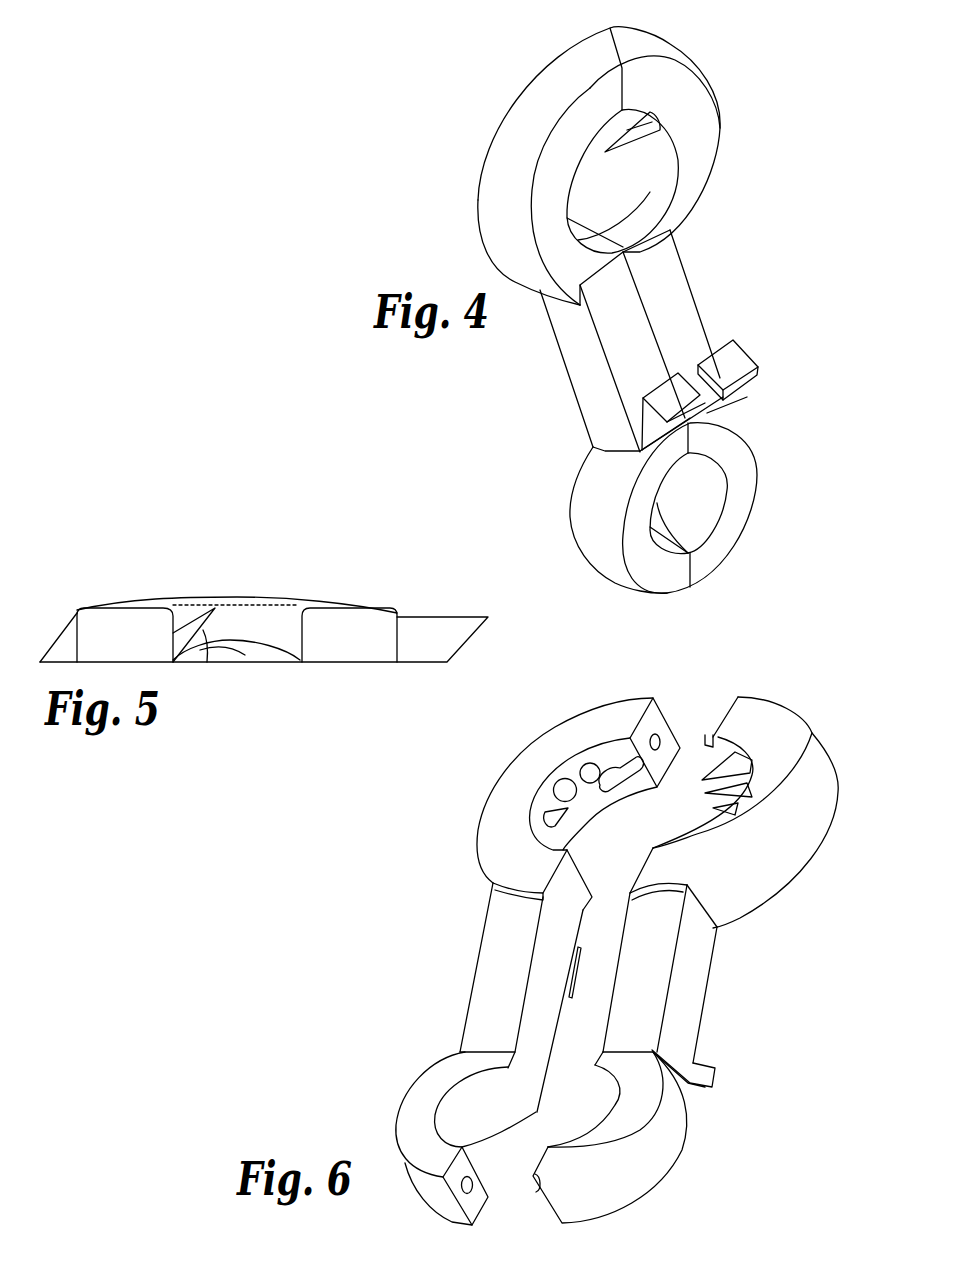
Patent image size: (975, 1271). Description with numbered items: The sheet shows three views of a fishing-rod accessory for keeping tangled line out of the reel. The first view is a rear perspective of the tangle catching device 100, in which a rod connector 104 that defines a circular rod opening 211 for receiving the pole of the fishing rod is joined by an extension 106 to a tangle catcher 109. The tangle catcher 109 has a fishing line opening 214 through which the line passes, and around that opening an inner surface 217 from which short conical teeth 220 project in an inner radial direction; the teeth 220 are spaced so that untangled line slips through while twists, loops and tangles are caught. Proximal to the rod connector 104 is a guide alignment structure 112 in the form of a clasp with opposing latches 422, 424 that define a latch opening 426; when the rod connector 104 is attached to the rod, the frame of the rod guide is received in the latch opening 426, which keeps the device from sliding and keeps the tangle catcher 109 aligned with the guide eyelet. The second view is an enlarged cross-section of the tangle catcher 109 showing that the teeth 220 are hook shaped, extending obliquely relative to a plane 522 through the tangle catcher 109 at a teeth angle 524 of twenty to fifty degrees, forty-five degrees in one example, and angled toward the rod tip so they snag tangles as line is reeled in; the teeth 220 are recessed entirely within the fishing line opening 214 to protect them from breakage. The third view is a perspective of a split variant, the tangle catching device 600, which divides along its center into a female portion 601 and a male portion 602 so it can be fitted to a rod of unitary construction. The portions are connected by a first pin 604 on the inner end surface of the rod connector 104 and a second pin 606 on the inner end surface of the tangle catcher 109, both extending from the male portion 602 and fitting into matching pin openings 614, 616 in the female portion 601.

In FIG. 4, the tangle catching device 100 is at (478, 72).
In FIG. 4, the rod connector 104 is at (730, 523).
In FIG. 6, the rod connector 104 is at (648, 1162).
In FIG. 4, the extension 106 is at (673, 302).
In FIG. 6, the extension 106 is at (693, 992).
In FIG. 4, the tangle catcher 109 is at (687, 183).
In FIG. 5, the tangle catcher 109 is at (315, 603).
In FIG. 6, the tangle catcher 109 is at (790, 740).
In FIG. 4, the guide alignment structure 112 is at (757, 397).
In FIG. 6, the guide alignment structure 112 is at (723, 1085).
In FIG. 4, the rod opening 211 is at (660, 497).
In FIG. 4, the fishing line opening 214 is at (593, 170).
In FIG. 5, the fishing line opening 214 is at (242, 610).
In FIG. 4, the inner surface 217 is at (632, 195).
In FIG. 4, the teeth 220 is at (660, 115).
In FIG. 5, the teeth 220 is at (185, 637).
In FIG. 6, the teeth 220 is at (745, 772).
In FIG. 4, the latch 422 is at (727, 367).
In FIG. 4, the latch 424 is at (670, 403).
In FIG. 4, the latch opening 426 is at (683, 367).
In FIG. 5, the plane 522 is at (415, 637).
In FIG. 5, the teeth angle 524 is at (250, 643).
In FIG. 6, the tangle catching device 600 is at (705, 648).
In FIG. 6, the female portion 601 is at (586, 697).
In FIG. 6, the male portion 602 is at (790, 688).
In FIG. 6, the first pin 604 is at (537, 1190).
In FIG. 6, the second pin 606 is at (707, 733).
In FIG. 6, the pin opening 614 is at (470, 1192).
In FIG. 6, the pin opening 616 is at (657, 735).